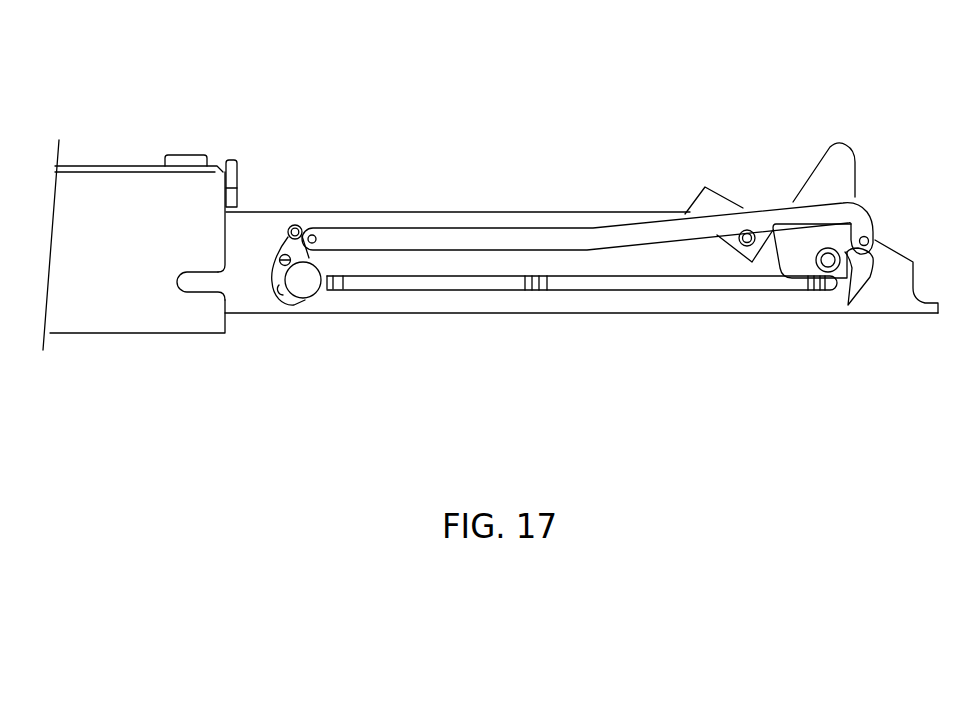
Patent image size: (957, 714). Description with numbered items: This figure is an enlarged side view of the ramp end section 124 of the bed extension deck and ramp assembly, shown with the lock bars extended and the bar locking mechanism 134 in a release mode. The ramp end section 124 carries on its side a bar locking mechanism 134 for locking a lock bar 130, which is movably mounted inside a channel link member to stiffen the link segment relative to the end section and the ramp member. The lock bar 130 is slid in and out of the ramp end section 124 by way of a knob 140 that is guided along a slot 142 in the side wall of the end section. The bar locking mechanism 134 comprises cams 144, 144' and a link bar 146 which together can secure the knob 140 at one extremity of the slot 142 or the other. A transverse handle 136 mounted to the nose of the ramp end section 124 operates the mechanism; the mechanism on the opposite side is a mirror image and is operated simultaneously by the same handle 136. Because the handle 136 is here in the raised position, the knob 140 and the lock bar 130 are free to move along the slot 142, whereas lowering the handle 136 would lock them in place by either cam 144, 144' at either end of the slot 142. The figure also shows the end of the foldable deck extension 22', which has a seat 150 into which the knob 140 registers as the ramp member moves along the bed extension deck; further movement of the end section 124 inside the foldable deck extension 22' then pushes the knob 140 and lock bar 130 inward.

The foldable deck extension 22' is at (140, 212).
The ramp end section 124 is at (330, 211).
The link bar 146 is at (470, 238).
The bar locking mechanism 134 is at (600, 183).
The transverse handle 136 is at (827, 161).
The cam 144 is at (855, 248).
The seat 150 is at (190, 294).
The cam 144' is at (251, 321).
The knob 140 is at (307, 288).
The lock bar 130 is at (338, 284).
The slot 142 is at (493, 286).